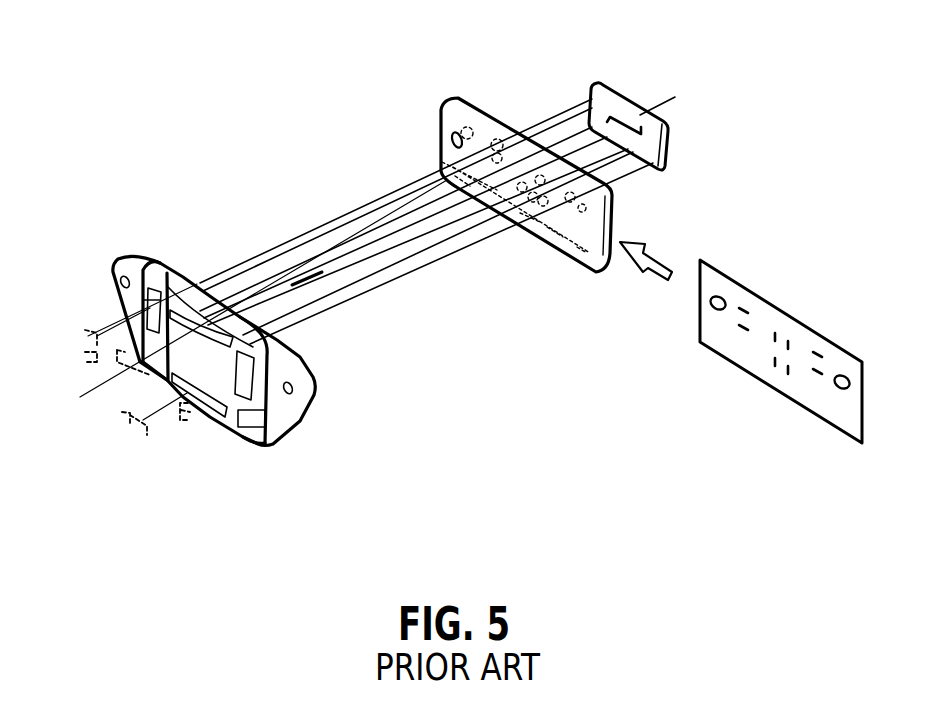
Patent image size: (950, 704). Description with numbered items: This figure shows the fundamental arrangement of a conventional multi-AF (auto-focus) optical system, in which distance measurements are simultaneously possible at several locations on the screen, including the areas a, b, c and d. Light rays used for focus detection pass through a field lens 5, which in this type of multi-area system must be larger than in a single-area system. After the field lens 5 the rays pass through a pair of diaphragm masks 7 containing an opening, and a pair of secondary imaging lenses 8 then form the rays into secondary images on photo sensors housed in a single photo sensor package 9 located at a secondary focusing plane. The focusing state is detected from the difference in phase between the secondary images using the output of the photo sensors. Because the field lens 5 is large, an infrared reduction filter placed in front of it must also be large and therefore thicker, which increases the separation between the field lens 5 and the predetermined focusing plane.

The field lens 5 is at (279, 412).
The diaphragm masks 7 is at (700, 342).
The secondary imaging lenses 8 is at (578, 262).
The photo sensor package 9 is at (613, 88).
The distance measurement area a is at (163, 373).
The distance measurement area b is at (88, 341).
The distance measurement area c is at (193, 420).
The distance measurement area d is at (125, 427).